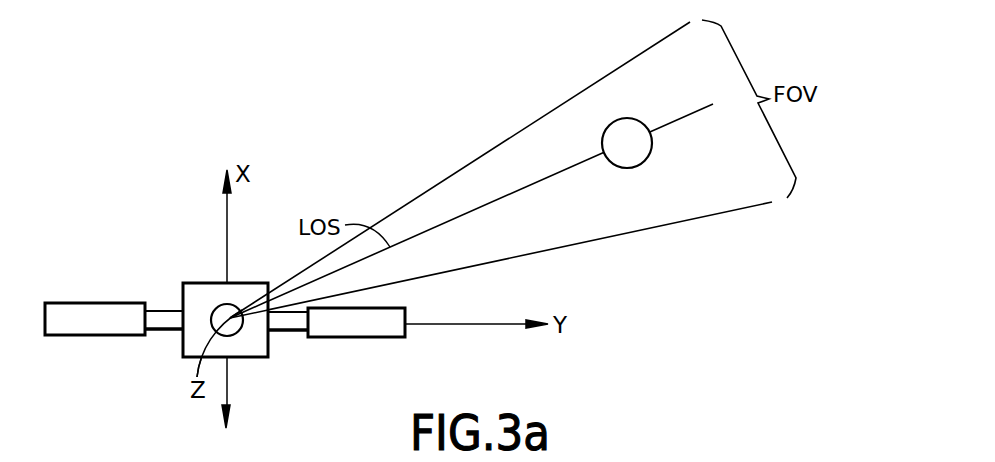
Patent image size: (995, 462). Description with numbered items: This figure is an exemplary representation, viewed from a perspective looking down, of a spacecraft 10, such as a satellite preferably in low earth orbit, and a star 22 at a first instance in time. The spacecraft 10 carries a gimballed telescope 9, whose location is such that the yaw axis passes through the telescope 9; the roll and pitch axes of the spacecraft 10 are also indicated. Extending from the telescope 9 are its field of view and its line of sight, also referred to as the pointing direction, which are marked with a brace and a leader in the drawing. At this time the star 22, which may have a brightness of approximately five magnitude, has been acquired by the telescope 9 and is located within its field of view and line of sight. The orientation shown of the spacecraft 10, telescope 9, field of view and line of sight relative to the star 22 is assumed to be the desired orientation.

The telescope 9 is at (233, 312).
The spacecraft 10 is at (183, 295).
The star 22 is at (628, 118).